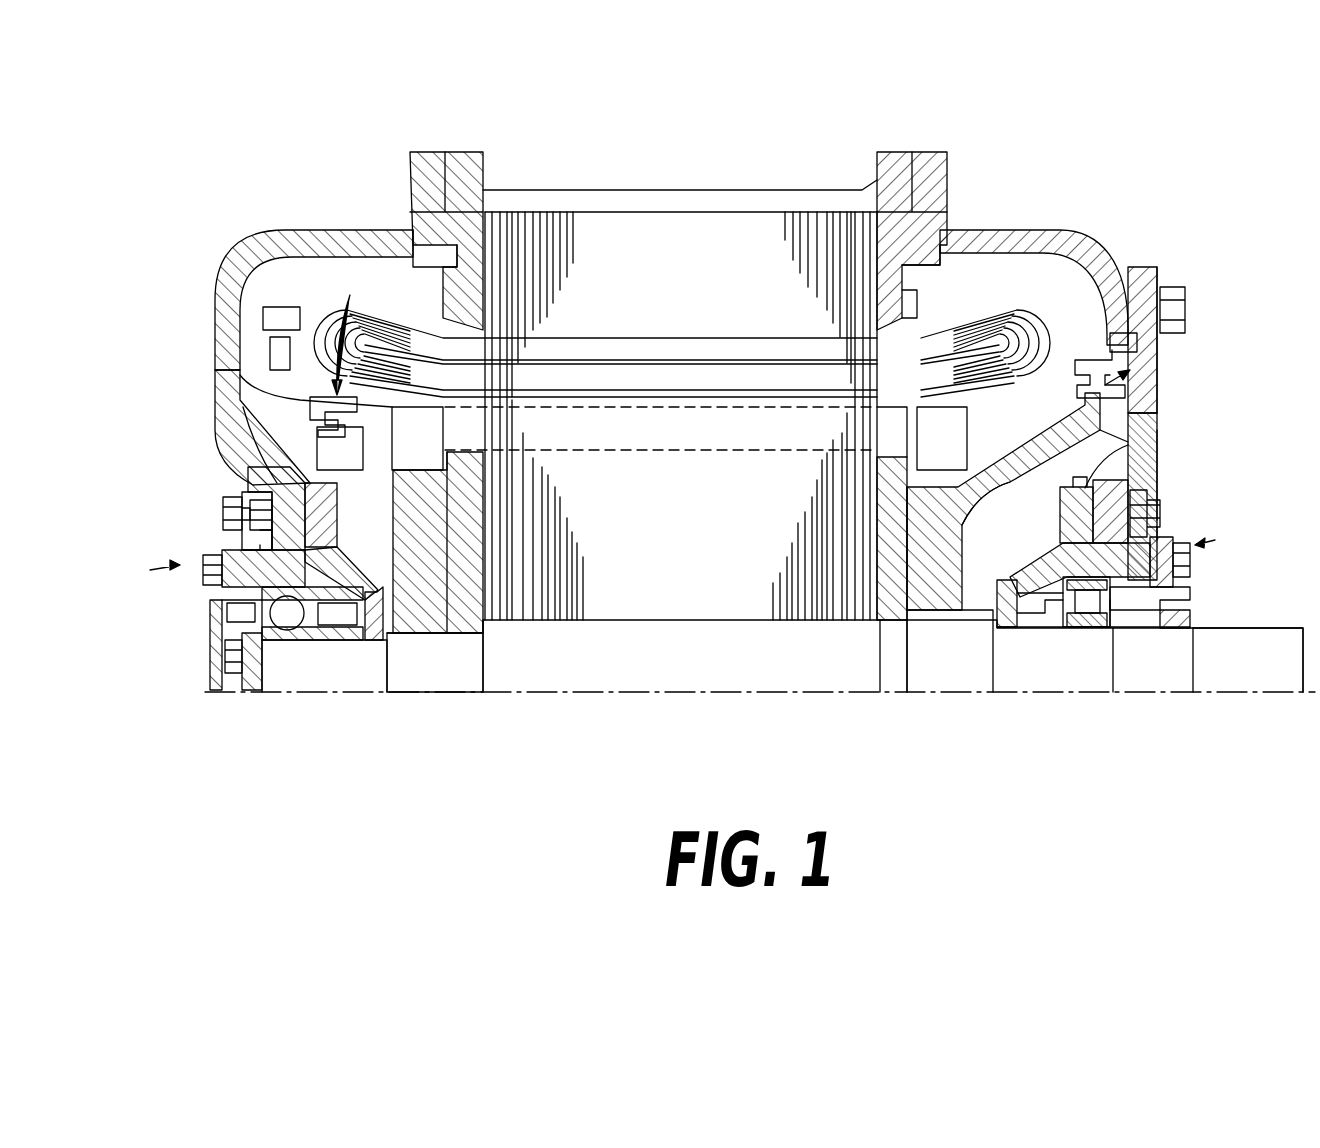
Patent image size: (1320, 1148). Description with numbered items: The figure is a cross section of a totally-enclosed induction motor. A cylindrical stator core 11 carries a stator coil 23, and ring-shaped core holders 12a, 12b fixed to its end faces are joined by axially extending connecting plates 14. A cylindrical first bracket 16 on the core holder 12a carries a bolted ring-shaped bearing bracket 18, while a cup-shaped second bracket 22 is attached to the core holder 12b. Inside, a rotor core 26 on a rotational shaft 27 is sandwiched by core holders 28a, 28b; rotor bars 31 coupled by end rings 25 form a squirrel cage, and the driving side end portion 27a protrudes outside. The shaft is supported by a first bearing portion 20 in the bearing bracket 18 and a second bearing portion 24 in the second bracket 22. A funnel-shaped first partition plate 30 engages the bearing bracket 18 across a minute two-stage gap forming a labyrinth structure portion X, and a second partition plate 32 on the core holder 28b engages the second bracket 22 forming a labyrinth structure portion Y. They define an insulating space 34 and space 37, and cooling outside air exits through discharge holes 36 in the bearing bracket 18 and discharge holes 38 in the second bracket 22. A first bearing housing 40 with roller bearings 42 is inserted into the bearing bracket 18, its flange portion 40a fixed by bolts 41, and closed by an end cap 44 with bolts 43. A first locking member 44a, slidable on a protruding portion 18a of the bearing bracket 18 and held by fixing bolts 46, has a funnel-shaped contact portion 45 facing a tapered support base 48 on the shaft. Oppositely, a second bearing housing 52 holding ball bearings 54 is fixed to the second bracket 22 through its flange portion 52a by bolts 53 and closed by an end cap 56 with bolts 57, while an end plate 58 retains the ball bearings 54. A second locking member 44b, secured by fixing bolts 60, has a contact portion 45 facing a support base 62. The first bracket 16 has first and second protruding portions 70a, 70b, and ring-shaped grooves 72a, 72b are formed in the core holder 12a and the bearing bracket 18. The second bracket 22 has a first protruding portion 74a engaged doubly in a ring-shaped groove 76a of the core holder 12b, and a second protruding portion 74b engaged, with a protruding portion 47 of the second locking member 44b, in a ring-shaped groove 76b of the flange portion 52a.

The stator core 11 is at (712, 243).
The core holder 12a is at (905, 215).
The core holder 12b is at (475, 230).
The connecting plate 14 is at (622, 192).
The first bracket 16 is at (1060, 232).
The bearing bracket 18 is at (1160, 365).
The protruding portion 18a is at (1160, 450).
The first bearing portion 20 is at (1215, 540).
The second bracket 22 is at (225, 280).
The stator coil 23 is at (950, 335).
The second bearing portion 24 is at (150, 570).
The end ring 25 is at (415, 408).
The rotor core 26 is at (668, 565).
The rotational shaft 27 is at (738, 680).
The driving side end portion 27a is at (1225, 677).
The core holder 28a is at (887, 590).
The core holder 28b is at (470, 640).
The first partition plate 30 is at (1028, 452).
The rotor bar 31 is at (683, 443).
The second partition plate 32 is at (360, 462).
The space 34 is at (978, 555).
The discharge hole 36 is at (1160, 425).
The space 37 is at (420, 620).
The discharge hole 38 is at (228, 420).
The first bearing housing 40 is at (1125, 560).
The flange portion 40a is at (1135, 495).
The bolt 41 is at (1163, 505).
The roller bearing 42 is at (1088, 630).
The bolt 43 is at (1193, 560).
The end cap 44 is at (1177, 603).
The first locking member 44a is at (1060, 530).
The second locking member 44b is at (270, 470).
The contact portion 45 is at (1015, 583).
The fixing bolt 46 is at (1133, 495).
The protruding portion 47 is at (312, 535).
The support base 48 is at (1007, 625).
The second bearing housing 52 is at (235, 585).
The flange portion 52a is at (250, 490).
The bolt 53 is at (225, 513).
The ball bearing 54 is at (298, 642).
The end cap 56 is at (222, 655).
The bolt 57 is at (205, 578).
The end plate 58 is at (255, 660).
The fixing bolt 60 is at (258, 505).
The support base 62 is at (375, 615).
The first protruding portion 70a is at (905, 250).
The second protruding portion 70b is at (1167, 333).
The ring-shaped groove 72a is at (910, 258).
The ring-shaped groove 72b is at (1100, 340).
The first protruding portion 74a is at (452, 258).
The second protruding portion 74b is at (262, 535).
The ring-shaped groove 76a is at (417, 230).
The ring-shaped groove 76b is at (245, 548).
The labyrinth structure portion X is at (1160, 366).
The labyrinth structure portion Y is at (342, 330).